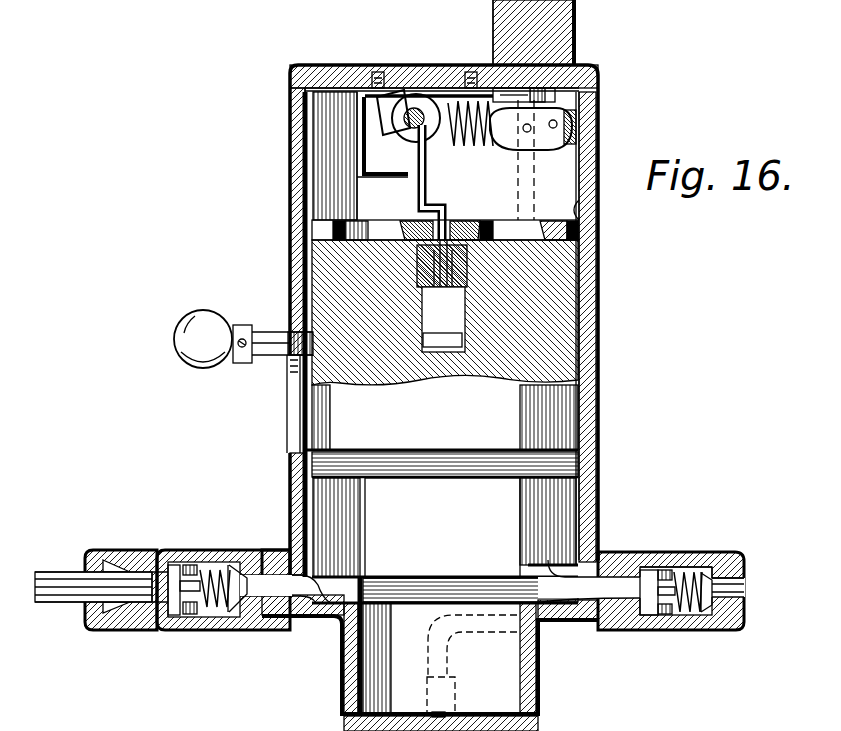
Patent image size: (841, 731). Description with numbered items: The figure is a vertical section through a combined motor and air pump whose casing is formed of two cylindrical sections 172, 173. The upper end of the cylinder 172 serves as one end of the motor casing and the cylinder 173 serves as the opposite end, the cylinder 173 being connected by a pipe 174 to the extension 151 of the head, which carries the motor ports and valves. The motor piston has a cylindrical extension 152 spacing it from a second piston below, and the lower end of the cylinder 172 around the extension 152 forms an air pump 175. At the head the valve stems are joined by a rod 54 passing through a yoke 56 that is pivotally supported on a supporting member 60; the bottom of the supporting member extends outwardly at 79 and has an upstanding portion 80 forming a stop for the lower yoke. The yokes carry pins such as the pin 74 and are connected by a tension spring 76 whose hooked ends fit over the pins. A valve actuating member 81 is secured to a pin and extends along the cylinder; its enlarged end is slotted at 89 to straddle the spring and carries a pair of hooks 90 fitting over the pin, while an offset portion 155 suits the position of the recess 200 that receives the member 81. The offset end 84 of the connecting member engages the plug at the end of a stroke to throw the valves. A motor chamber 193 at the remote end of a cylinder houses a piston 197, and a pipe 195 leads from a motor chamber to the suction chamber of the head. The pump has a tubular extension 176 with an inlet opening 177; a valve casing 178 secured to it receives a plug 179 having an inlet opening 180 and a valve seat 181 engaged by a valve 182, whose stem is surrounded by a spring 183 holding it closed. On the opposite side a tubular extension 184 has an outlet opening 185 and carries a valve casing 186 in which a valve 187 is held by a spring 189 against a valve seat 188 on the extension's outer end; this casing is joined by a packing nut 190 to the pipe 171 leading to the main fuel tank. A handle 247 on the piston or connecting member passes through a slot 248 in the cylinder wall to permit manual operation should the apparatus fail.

The extension 151 is at (580, 34).
The hooks 90 is at (378, 92).
The supporting member 60 is at (435, 92).
The yoke 56 is at (583, 98).
The pin 74 is at (580, 125).
The remote end of cylinder (motor chamber) 193 is at (585, 162).
The piston 197 is at (590, 212).
The outwardly extended bottom of supporting member 79 is at (367, 165).
The upstanding portion 80 is at (368, 185).
The slot 89 is at (428, 142).
The tension spring 76 is at (480, 150).
The rod 54 is at (530, 133).
The offset portion 155 is at (440, 210).
The valve actuating member 81 is at (432, 322).
The offset end of connecting member 84 is at (452, 347).
The recess 200 is at (462, 325).
The handle 247 is at (228, 322).
The cylindrical section 172 is at (593, 360).
The slot 248 is at (292, 400).
The pipe 174 is at (560, 545).
The cylindrical extension 152 is at (445, 540).
The cylindrical section 173 is at (541, 672).
The tubular extension 184 is at (298, 618).
The outlet opening 185 is at (285, 589).
The pipe 195 is at (456, 668).
The valve casing 186 is at (177, 550).
The packing nut 190 is at (115, 550).
The pipe 171 is at (68, 572).
The valve 187 is at (202, 632).
The spring 189 is at (222, 565).
The valve seat 188 is at (254, 550).
The tubular extension 176 is at (565, 624).
The air pump 175 is at (590, 545).
The inlet opening 177 is at (605, 590).
The valve casing 178 is at (705, 543).
The plug 179 is at (746, 568).
The inlet opening 180 is at (742, 598).
The spring 183 is at (665, 635).
The valve 182 is at (696, 640).
The valve seat 181 is at (714, 625).